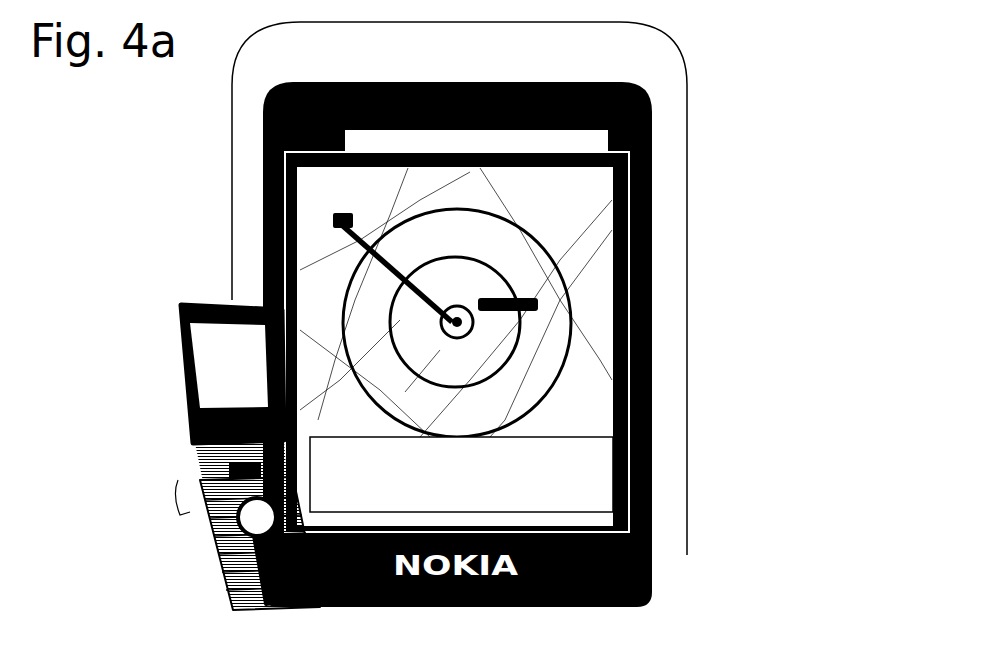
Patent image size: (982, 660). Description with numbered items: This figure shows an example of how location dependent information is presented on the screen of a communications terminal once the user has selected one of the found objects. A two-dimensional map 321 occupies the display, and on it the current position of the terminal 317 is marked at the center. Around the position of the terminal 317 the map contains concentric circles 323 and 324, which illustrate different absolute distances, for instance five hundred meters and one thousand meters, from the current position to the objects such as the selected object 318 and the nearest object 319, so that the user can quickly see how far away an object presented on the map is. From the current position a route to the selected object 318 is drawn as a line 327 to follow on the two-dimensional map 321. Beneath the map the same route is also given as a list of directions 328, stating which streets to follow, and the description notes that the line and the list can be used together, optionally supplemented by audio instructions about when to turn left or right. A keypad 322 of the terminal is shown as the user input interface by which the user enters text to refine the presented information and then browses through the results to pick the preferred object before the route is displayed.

The position of the terminal 317 is at (472, 320).
The selected object 318 is at (343, 220).
The nearest object 319 is at (427, 363).
The 2D map 321 is at (570, 232).
The keypad 322 is at (240, 553).
The concentric circle 323 is at (503, 367).
The concentric circle 324 is at (550, 403).
The line 327 is at (368, 258).
The list of directions 328 is at (583, 455).